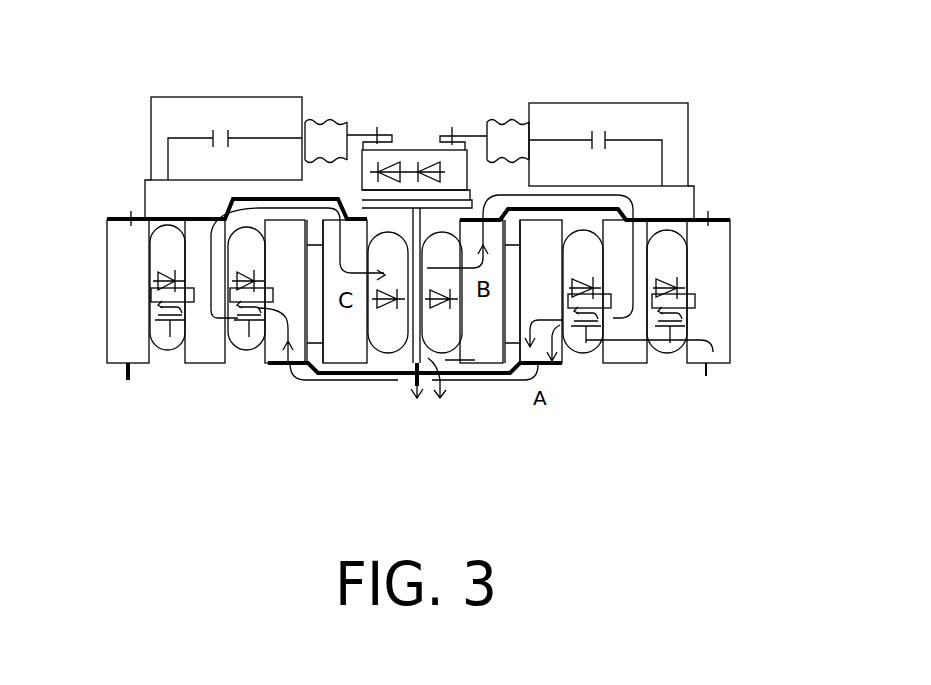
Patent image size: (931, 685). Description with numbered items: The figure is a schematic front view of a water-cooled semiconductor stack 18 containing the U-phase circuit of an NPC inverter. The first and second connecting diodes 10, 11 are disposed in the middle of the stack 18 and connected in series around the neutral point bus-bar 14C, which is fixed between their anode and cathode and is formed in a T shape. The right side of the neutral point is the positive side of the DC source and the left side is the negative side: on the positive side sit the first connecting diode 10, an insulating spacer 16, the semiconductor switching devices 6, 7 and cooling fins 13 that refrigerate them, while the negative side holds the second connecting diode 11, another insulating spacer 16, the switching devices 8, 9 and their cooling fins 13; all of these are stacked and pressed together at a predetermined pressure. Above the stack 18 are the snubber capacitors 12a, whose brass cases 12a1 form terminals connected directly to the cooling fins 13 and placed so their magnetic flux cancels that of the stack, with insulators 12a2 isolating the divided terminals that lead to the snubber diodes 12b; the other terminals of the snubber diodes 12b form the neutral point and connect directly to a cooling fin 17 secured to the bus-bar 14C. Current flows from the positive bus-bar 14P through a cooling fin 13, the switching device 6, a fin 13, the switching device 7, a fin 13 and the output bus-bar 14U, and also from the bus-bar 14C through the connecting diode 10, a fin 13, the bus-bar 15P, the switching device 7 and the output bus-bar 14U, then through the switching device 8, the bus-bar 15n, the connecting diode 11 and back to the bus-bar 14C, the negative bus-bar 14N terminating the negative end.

The snubber capacitor 12a is at (173, 97).
The case 12a1 is at (151, 148).
The insulator 12a2 is at (307, 122).
The snubber diode 12b is at (398, 148).
The cooling fin 17 is at (472, 190).
The semiconductor stack 18 is at (713, 140).
The cooling fin 13 is at (115, 297).
The second connecting diode 11 is at (372, 362).
The bus-bar 15n is at (270, 197).
The bus-bar 15P is at (555, 211).
The semiconductor switching device 9 is at (160, 350).
The semiconductor switching device 8 is at (243, 350).
The semiconductor switching device 7 is at (573, 357).
The semiconductor switching device 6 is at (672, 352).
The first connecting diode 10 is at (453, 355).
The output bus-bar 14U is at (413, 395).
The neutral point bus-bar 14C is at (408, 372).
The negative bus-bar 14N is at (123, 369).
The positive bus-bar 14P is at (706, 376).
The insulating spacer 16 is at (305, 382).